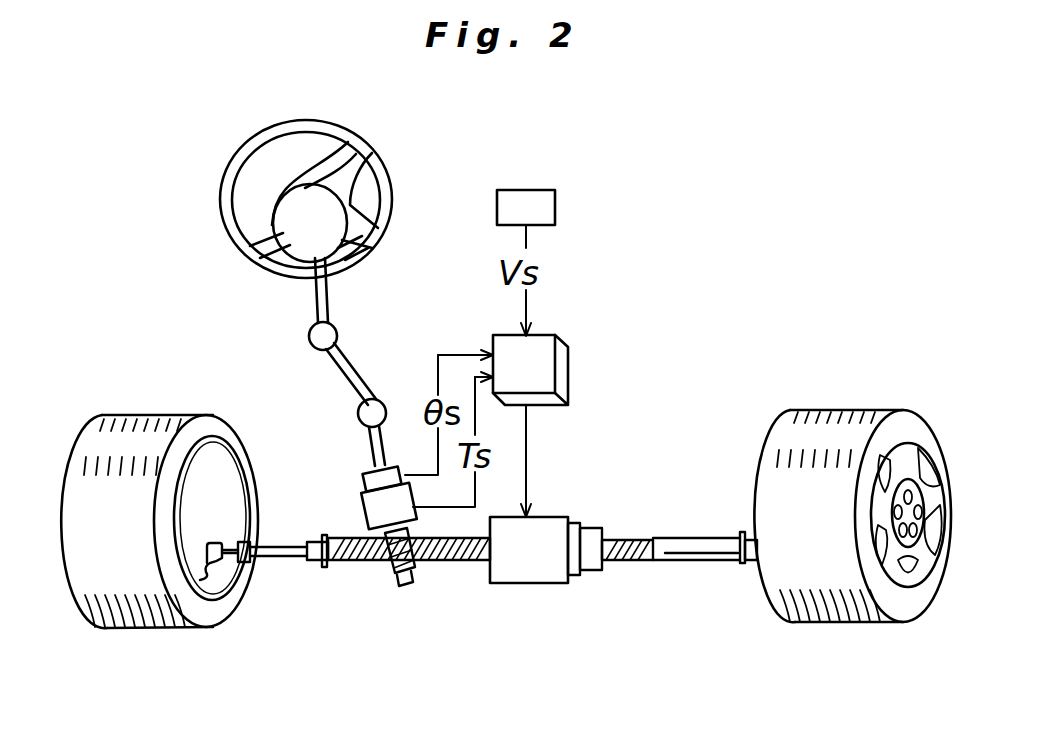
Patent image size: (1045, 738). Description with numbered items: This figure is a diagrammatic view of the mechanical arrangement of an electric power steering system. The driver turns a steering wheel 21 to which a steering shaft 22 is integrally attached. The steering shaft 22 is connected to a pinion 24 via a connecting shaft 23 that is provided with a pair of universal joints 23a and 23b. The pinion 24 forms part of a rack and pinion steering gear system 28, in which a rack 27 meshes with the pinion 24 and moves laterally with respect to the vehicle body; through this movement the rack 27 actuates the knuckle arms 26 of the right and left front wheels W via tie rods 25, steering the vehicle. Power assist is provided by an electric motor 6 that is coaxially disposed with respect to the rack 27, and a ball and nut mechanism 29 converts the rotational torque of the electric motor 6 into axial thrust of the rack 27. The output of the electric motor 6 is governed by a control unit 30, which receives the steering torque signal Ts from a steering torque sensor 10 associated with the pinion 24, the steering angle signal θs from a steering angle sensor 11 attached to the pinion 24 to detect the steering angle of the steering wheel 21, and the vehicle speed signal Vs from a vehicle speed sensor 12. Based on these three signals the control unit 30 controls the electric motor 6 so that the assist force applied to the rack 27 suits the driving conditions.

The steering wheel 21 is at (390, 173).
The steering shaft 22 is at (313, 300).
The connecting shaft 23 is at (340, 378).
The universal joint 23a is at (337, 323).
The universal joint 23b is at (385, 400).
The steering angle sensor 11 is at (360, 478).
The steering torque sensor 10 is at (365, 508).
The pinion 24 is at (393, 568).
The rack 27 is at (465, 563).
The electric motor 6 is at (548, 582).
The ball and nut mechanism 29 is at (590, 525).
The tie rod 25 is at (278, 557).
The knuckle arm 26 is at (212, 568).
The vehicle speed sensor 12 is at (555, 202).
The control unit 30 is at (568, 365).
The front wheel W is at (148, 415).
The rack and pinion steering gear system 28 is at (450, 640).